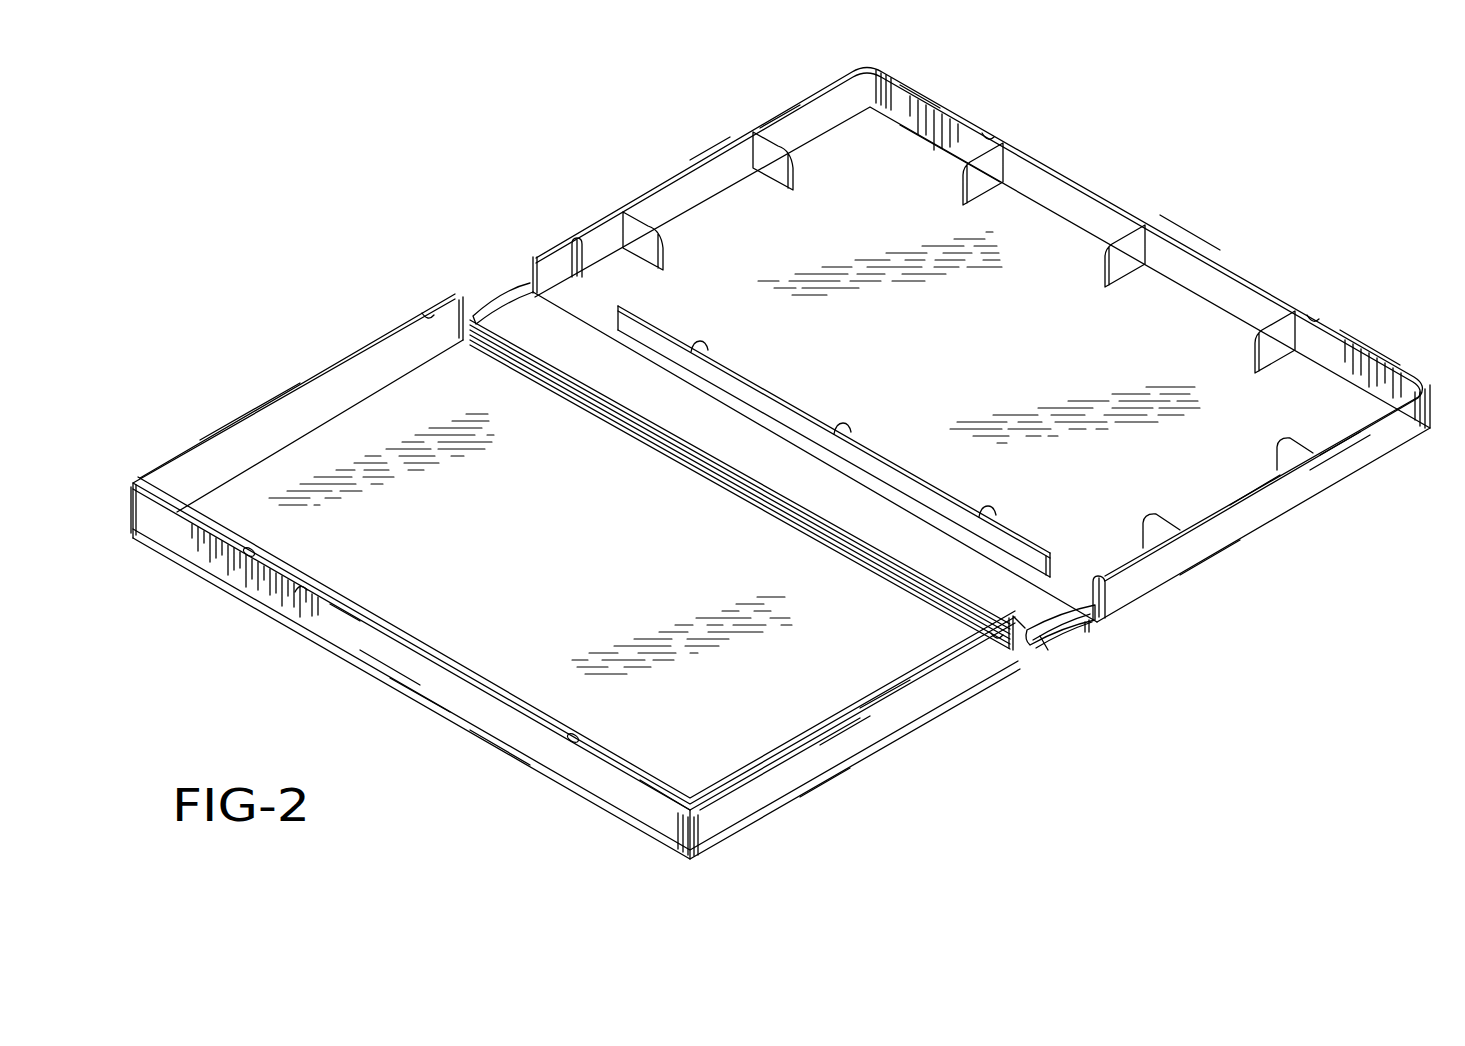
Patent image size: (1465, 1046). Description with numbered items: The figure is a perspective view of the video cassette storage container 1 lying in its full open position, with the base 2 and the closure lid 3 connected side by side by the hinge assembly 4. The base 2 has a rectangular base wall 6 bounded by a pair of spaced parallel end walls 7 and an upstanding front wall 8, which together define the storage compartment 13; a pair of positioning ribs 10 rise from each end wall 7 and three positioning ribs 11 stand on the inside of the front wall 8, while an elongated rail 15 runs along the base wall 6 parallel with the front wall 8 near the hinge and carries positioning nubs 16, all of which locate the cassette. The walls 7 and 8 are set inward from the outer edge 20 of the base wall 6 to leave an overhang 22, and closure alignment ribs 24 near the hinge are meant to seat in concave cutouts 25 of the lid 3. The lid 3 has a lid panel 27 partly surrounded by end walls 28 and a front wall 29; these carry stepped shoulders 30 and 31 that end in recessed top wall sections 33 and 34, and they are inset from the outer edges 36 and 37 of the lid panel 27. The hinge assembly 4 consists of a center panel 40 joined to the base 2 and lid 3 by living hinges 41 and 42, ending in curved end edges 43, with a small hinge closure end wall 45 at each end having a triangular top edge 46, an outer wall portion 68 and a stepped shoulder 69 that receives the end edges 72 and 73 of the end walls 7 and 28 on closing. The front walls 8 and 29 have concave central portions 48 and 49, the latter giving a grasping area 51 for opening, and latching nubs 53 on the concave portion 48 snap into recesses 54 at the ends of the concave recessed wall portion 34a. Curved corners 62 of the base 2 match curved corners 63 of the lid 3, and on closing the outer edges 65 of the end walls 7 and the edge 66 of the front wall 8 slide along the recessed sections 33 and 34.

The video cassette storage container 1 is at (1236, 165).
The base 2 is at (668, 177).
The closure lid 3 is at (292, 387).
The hinge assembly 4 is at (764, 438).
The base wall 6 is at (957, 344).
The end walls 7 is at (788, 122).
The front wall 8 is at (1368, 362).
The positioning ribs 10 is at (773, 178).
The positioning ribs 11 is at (984, 192).
The storage compartment 13 is at (1020, 225).
The elongated rail 15 is at (759, 392).
The positioning nubs 16 is at (704, 340).
The outer edge 20 is at (1345, 485).
The overhang 22 is at (1207, 563).
The closure alignment ribs 24 is at (577, 250).
The concave cutouts 25 is at (426, 316).
The lid panel 27 is at (586, 572).
The end walls 28 is at (240, 440).
The front wall 29 is at (648, 820).
The stepped shoulder 30 is at (845, 730).
The stepped shoulder 31 is at (300, 596).
The recessed top wall section 33 is at (886, 698).
The recessed top wall section 34 is at (190, 528).
The concave recessed wall portion 34a is at (350, 626).
The outer edge 36 is at (823, 784).
The outer edge 37 is at (497, 760).
The center panel 40 is at (660, 410).
The living hinge 41 is at (866, 470).
The living hinge 42 is at (795, 515).
The curved end edges 43 is at (1068, 642).
The hinge closure end wall 45 is at (511, 292).
The top edge 46 is at (487, 310).
The concave central portion 48 is at (1185, 248).
The concave central portion 49 is at (385, 660).
The grasping area 51 is at (415, 700).
The latching nubs 53 is at (991, 131).
The recesses 54 is at (249, 552).
The curved corners 62 is at (871, 66).
The curved corners 63 is at (126, 505).
The outer edges 65 is at (706, 152).
The edge 66 is at (918, 94).
The outer wall portion 68 is at (1075, 631).
The stepped shoulder 69 is at (1045, 642).
The end edge 72 is at (533, 275).
The end edge 73 is at (466, 298).